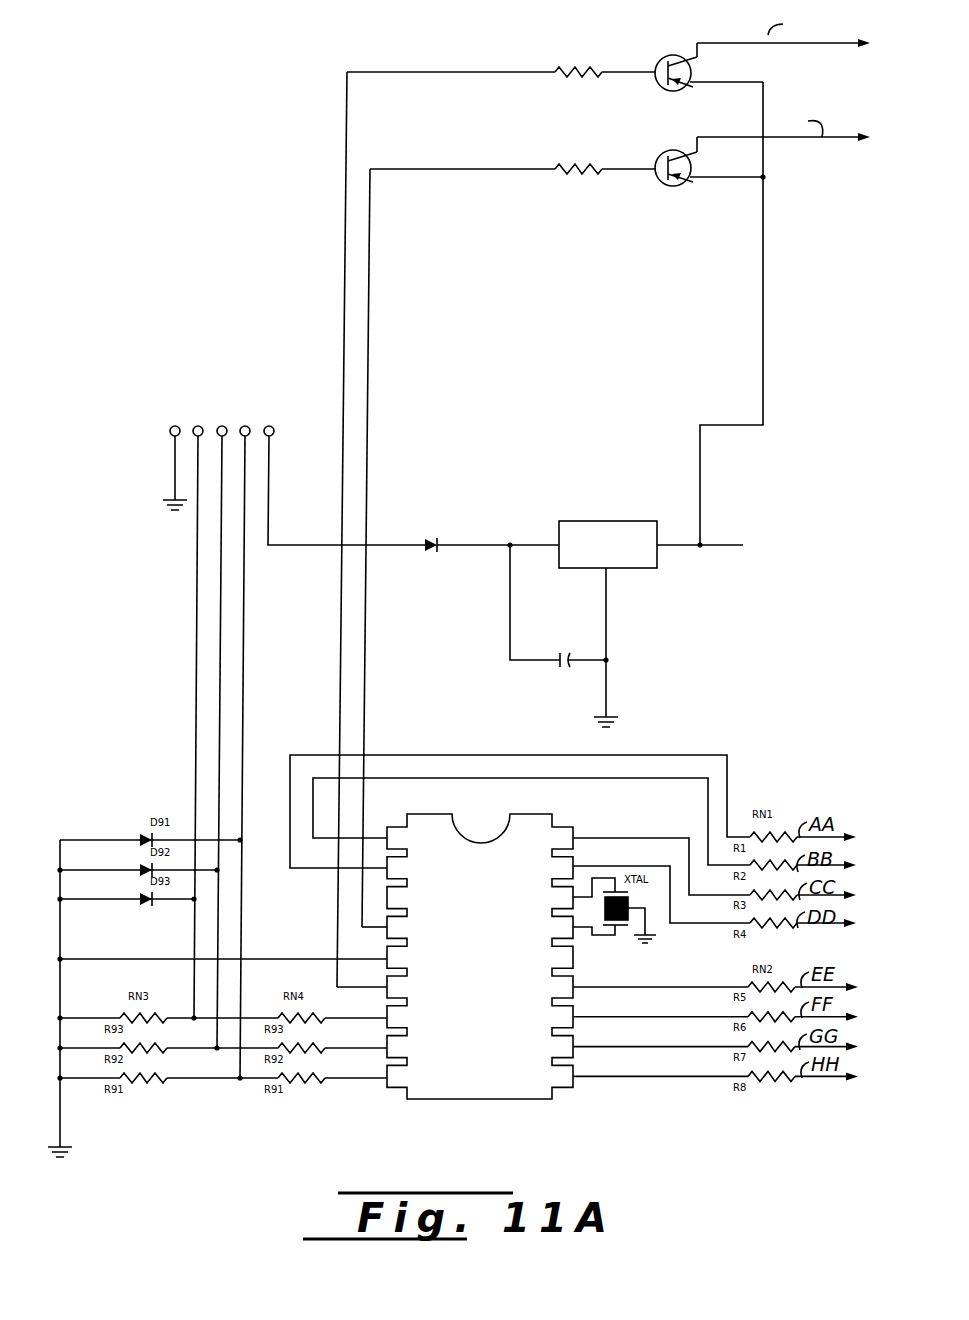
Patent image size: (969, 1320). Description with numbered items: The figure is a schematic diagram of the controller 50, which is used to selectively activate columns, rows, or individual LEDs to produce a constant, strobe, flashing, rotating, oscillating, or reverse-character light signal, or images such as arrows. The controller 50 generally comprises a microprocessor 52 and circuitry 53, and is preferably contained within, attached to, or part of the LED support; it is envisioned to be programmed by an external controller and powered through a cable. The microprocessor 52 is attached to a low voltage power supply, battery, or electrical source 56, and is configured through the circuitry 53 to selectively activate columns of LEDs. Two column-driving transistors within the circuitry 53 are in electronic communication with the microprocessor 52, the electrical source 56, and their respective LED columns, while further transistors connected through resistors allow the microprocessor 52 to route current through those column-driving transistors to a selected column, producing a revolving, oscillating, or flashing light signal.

The controller 50 is at (290, 210).
The microprocessor 52 is at (513, 1047).
The circuitry 53 is at (555, 46).
The electrical source 56 is at (562, 528).